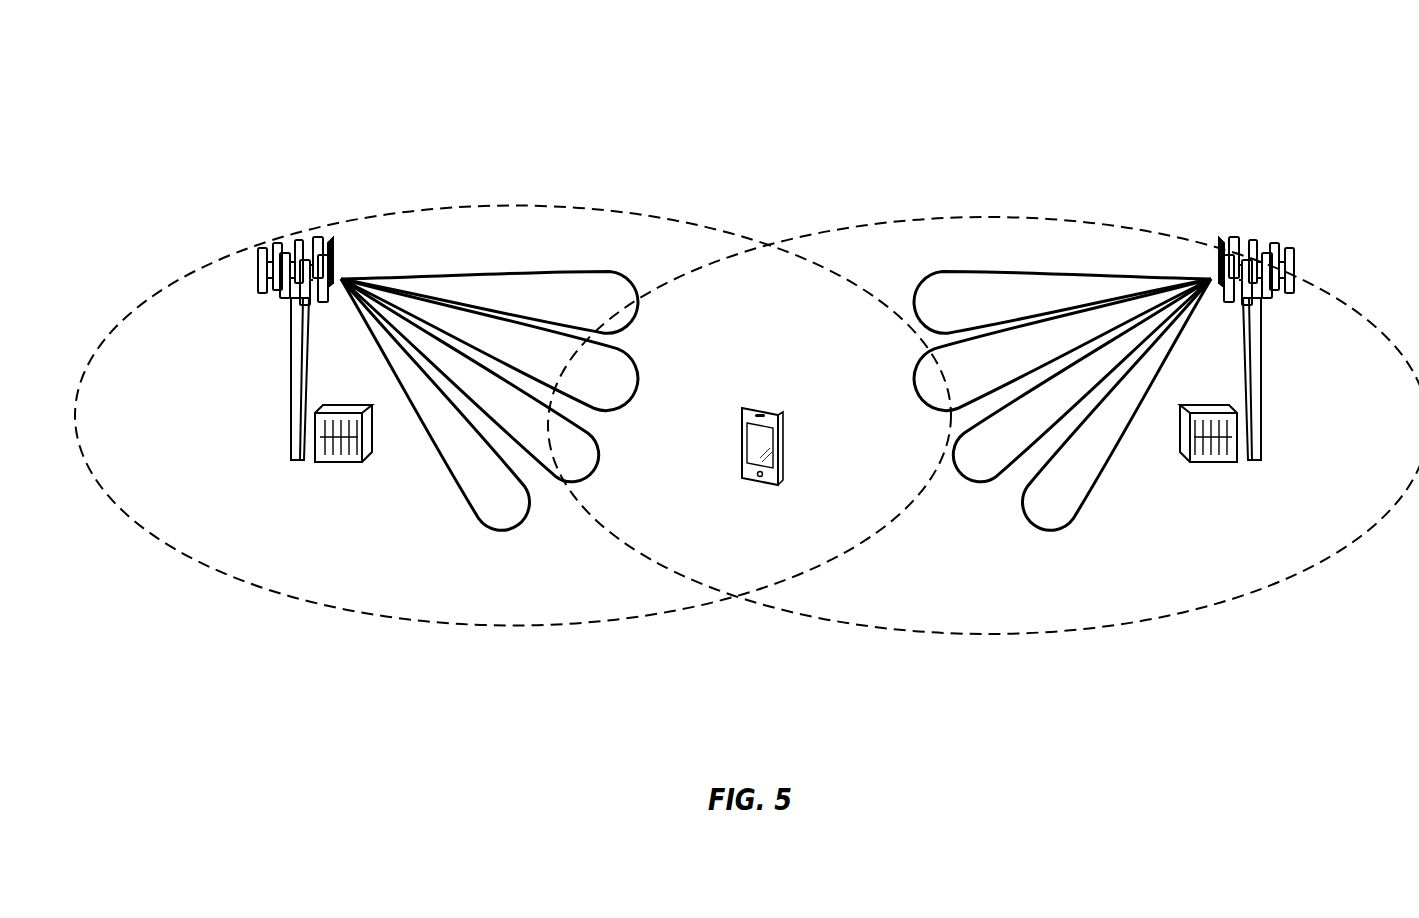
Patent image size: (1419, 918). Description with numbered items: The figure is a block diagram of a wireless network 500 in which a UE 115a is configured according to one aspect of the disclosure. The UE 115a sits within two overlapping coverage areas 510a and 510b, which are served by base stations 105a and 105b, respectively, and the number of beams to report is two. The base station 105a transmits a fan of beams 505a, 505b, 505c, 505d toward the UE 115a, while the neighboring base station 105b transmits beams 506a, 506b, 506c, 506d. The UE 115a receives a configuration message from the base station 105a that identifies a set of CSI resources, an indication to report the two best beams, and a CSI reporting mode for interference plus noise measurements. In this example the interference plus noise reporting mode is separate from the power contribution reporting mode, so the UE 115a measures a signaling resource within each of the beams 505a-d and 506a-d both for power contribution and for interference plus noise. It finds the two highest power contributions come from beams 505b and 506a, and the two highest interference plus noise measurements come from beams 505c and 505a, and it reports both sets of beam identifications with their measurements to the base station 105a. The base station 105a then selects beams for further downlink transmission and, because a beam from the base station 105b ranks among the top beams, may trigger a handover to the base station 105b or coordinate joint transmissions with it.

The wireless network 500 is at (875, 91).
The base station 105a is at (328, 462).
The base station 105b is at (1224, 462).
The UE 115a is at (767, 407).
The beam 505a is at (637, 318).
The beam 505b is at (638, 395).
The beam 505c is at (598, 470).
The beam 505d is at (488, 525).
The beam 506a is at (915, 318).
The beam 506b is at (914, 395).
The beam 506c is at (954, 470).
The beam 506d is at (1064, 525).
The coverage area 510a is at (275, 593).
The coverage area 510b is at (1198, 612).